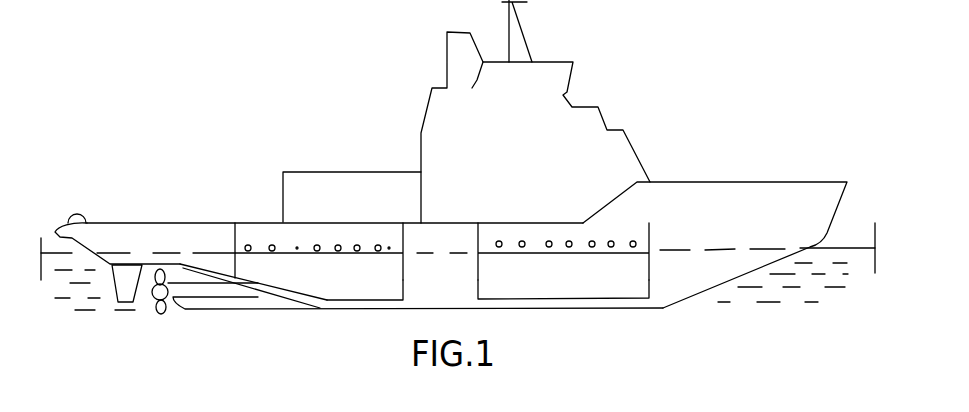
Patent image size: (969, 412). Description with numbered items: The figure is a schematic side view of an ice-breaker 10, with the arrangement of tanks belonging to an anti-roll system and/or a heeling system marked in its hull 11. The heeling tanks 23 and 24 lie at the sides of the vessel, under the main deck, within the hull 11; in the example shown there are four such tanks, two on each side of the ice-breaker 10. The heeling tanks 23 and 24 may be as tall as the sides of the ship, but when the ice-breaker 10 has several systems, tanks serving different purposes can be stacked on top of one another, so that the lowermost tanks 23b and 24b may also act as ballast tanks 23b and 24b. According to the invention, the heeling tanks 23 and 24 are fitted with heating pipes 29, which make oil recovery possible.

The ice-breaker 10 is at (638, 97).
The hull 11 is at (717, 210).
The heeling tank 23 is at (622, 233).
The lowermost tank 23b is at (605, 287).
The heeling tank 24 is at (263, 232).
The lowermost tank 24b is at (363, 287).
The heating pipes 29 is at (523, 243).